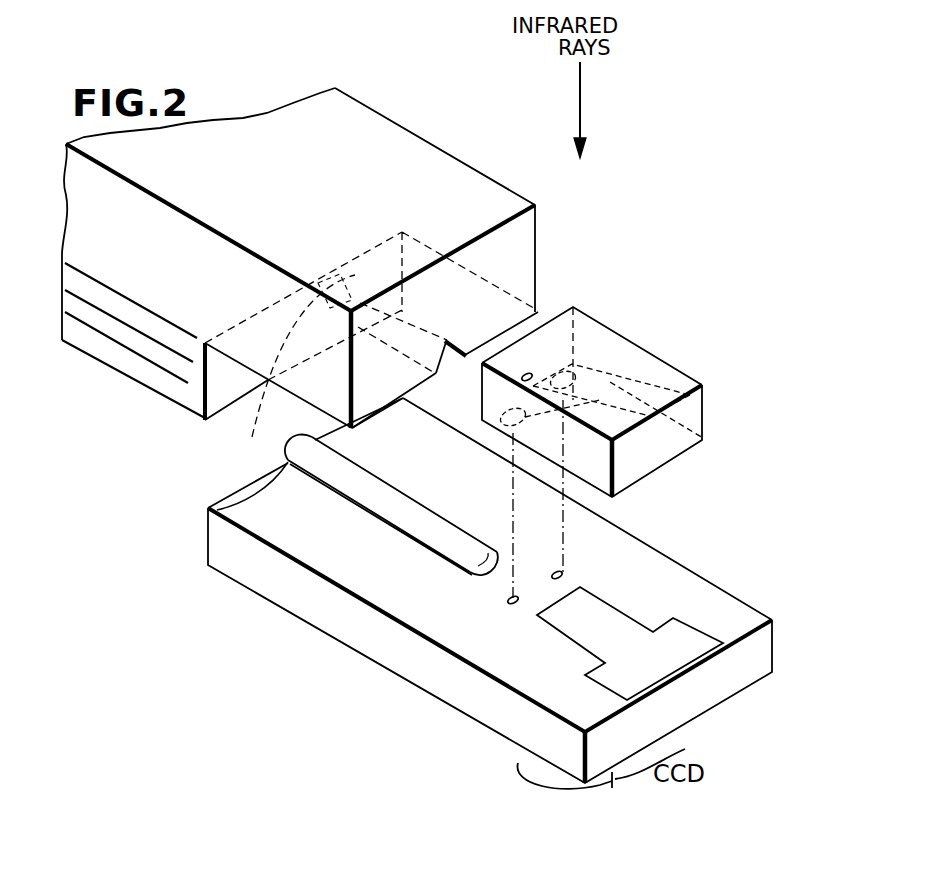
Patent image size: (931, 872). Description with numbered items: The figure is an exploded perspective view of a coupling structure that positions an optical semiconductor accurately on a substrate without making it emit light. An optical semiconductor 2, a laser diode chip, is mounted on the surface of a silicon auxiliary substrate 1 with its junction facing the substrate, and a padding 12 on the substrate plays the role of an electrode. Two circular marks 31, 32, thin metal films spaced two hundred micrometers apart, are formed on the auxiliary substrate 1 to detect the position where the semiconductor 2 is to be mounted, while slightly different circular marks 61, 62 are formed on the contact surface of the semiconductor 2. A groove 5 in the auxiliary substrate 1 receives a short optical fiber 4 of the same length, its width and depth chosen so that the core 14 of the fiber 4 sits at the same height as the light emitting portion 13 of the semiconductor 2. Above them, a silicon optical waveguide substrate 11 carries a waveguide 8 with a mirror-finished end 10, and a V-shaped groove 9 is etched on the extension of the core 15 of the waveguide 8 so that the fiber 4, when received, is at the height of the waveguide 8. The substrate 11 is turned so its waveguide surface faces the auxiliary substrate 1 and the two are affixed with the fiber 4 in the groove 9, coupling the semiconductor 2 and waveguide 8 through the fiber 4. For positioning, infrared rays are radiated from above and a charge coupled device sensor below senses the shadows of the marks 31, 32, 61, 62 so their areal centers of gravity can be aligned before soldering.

The auxiliary substrate 1 is at (545, 668).
The optical semiconductor 2 is at (580, 306).
The optical fiber 4 is at (388, 493).
The groove 5 is at (207, 509).
The waveguide 8 is at (140, 372).
The V-shaped groove 9 is at (448, 340).
The mirror-finished end 10 is at (226, 386).
The optical waveguide substrate 11 is at (397, 122).
The padding 12 is at (678, 650).
The light emitting portion 13 is at (534, 372).
The core 14 is at (486, 565).
The core 15 is at (254, 437).
The circular mark 31 is at (562, 571).
The circular mark 32 is at (520, 598).
The circular mark 61 is at (617, 380).
The circular mark 62 is at (690, 395).